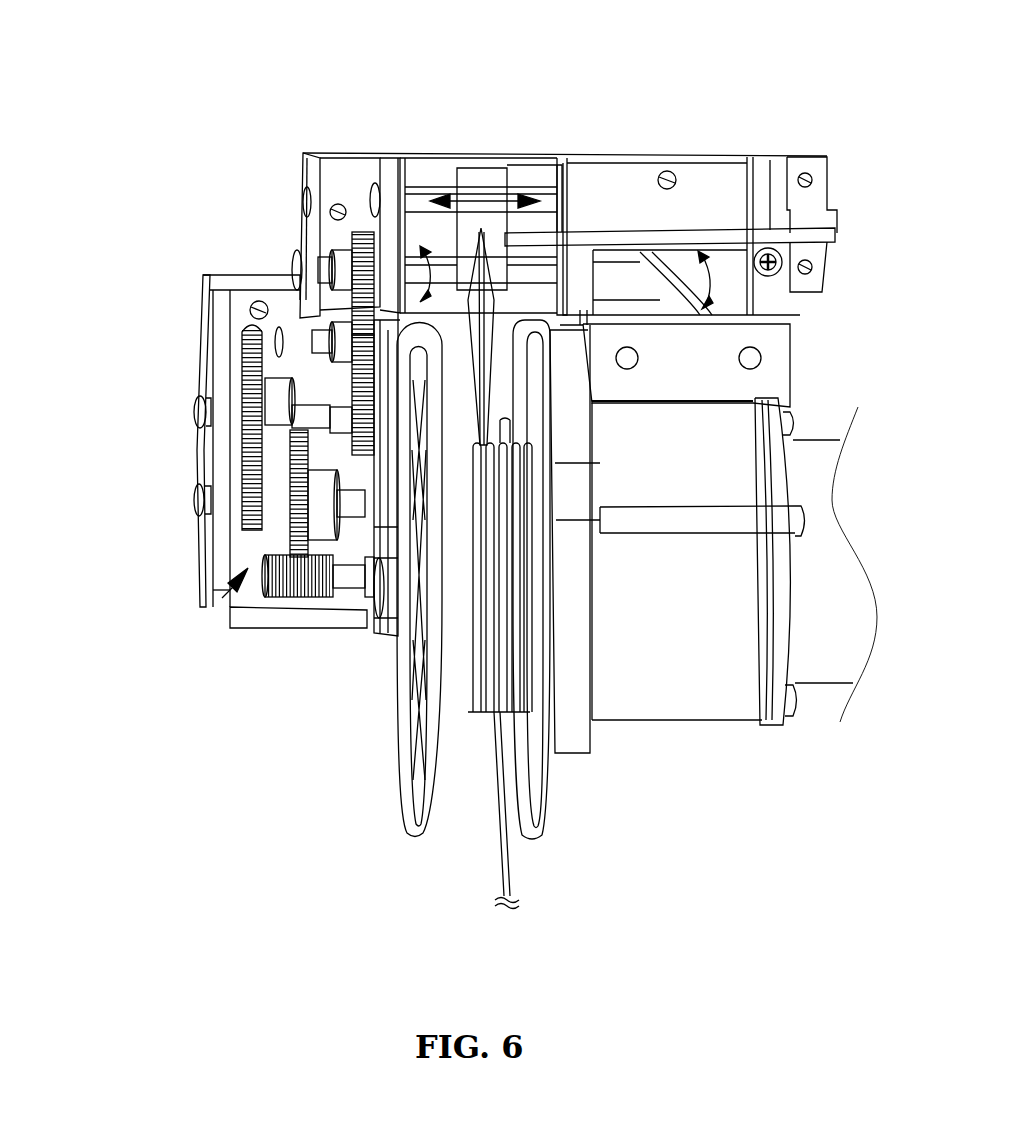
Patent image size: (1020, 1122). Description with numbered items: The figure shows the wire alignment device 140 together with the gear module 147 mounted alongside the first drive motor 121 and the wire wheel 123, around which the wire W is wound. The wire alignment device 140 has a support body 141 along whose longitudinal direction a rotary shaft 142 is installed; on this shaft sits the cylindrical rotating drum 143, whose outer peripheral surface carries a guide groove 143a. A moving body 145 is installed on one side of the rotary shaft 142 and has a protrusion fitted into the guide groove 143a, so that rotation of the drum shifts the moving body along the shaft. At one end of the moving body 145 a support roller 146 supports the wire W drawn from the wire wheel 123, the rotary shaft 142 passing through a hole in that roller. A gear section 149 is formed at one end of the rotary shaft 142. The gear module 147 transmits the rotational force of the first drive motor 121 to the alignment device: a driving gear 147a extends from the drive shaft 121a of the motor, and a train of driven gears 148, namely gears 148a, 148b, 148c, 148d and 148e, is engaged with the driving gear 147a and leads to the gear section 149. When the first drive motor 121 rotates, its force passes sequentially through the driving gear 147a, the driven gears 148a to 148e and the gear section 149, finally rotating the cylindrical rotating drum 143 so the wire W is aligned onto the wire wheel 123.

The wire alignment device 140 is at (645, 106).
The support body 141 is at (733, 172).
The rotary shaft 142 is at (520, 273).
The cylindrical rotating drum 143 is at (774, 262).
The guide groove 143a is at (688, 294).
The moving body 145 is at (690, 217).
The support roller 146 is at (488, 160).
The gear module 147 is at (290, 530).
The driving gear 147a is at (296, 590).
The driven gears 148 is at (202, 551).
The driven gear 148a is at (256, 572).
The driven gear 148b is at (290, 497).
The driven gear 148c is at (285, 440).
The driven gear 148d is at (364, 388).
The driven gear 148e is at (362, 300).
The gear section 149 is at (357, 258).
The first drive motor 121 is at (831, 657).
The drive shaft 121a is at (343, 588).
The wire wheel 123 is at (552, 790).
The wire W is at (502, 848).